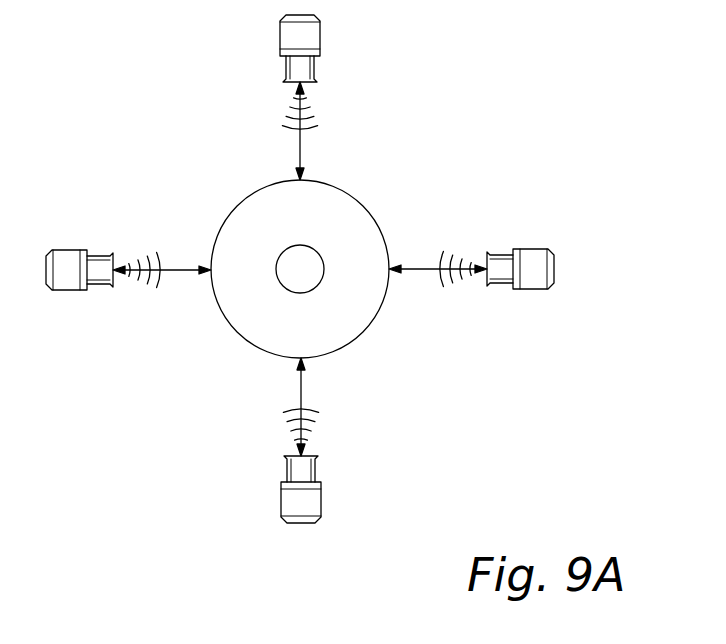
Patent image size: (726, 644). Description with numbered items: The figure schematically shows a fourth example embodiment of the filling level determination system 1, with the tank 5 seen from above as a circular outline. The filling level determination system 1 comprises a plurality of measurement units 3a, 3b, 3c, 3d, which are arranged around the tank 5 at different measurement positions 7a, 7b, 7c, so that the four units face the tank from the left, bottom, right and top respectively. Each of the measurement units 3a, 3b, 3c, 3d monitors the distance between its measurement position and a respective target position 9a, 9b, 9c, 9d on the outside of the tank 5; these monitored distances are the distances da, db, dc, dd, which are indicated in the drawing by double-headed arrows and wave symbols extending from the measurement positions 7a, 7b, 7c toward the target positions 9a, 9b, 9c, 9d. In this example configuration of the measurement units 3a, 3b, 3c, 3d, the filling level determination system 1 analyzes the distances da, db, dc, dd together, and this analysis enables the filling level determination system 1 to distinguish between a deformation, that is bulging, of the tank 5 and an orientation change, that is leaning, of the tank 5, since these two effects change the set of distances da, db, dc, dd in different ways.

The filling level determination system 1 is at (471, 104).
The tank 5 is at (367, 202).
The measurement unit 3a is at (68, 250).
The measurement unit 3b is at (282, 502).
The measurement unit 3c is at (533, 248).
The measurement unit 3d is at (281, 40).
The measurement position 7a is at (100, 263).
The measurement position 7b is at (295, 472).
The measurement position 7c is at (308, 68).
The target position 9a is at (208, 275).
The target position 9b is at (306, 366).
The target position 9c is at (390, 273).
The target position 9d is at (298, 178).
The distance da is at (157, 282).
The distance db is at (310, 410).
The distance dc is at (452, 278).
The distance dd is at (310, 128).